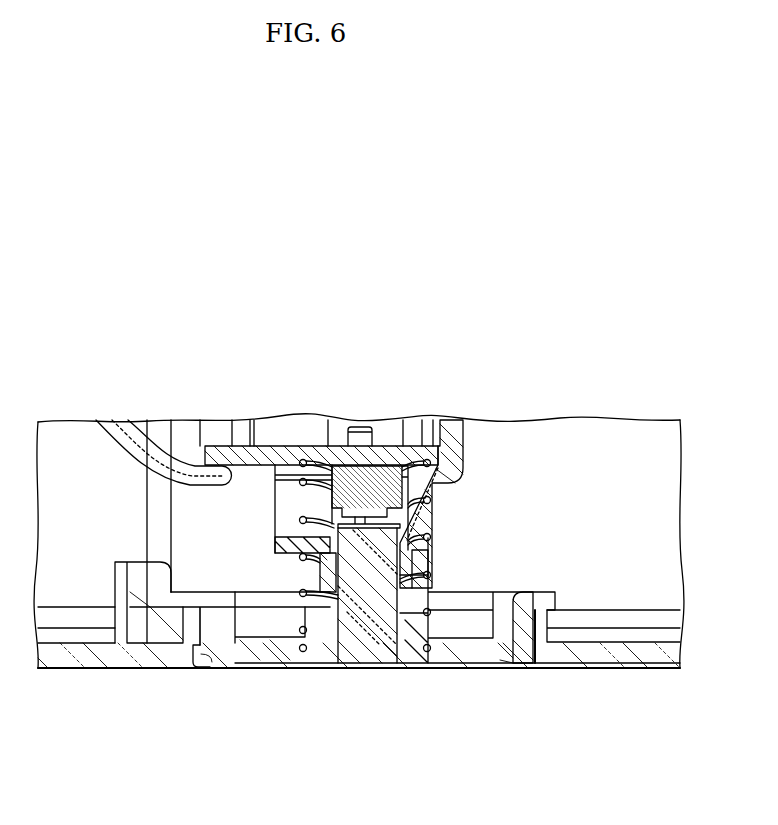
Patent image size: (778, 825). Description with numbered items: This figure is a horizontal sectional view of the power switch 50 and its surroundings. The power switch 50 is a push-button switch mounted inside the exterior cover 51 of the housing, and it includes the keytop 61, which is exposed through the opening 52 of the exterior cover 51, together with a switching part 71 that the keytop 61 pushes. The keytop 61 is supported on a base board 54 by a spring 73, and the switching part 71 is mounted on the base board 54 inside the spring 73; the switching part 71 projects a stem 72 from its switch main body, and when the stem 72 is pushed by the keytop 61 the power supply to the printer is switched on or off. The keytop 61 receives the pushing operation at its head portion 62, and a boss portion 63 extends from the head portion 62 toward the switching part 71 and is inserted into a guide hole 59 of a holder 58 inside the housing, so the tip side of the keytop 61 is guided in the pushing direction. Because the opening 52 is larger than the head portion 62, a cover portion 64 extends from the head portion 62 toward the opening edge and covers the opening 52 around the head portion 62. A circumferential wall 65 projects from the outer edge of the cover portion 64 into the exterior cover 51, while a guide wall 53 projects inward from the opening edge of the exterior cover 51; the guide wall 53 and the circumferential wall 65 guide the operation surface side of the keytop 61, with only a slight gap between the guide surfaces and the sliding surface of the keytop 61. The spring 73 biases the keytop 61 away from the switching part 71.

The power switch 50 is at (299, 722).
The exterior cover 51 is at (114, 665).
The opening 52 is at (215, 665).
The guide wall 53 is at (546, 622).
The base board 54 is at (290, 452).
The holder 58 is at (434, 513).
The guide hole 59 is at (336, 567).
The keytop 61 is at (374, 680).
The head portion 62 is at (396, 658).
The boss portion 63 is at (385, 551).
The cover portion 64 is at (268, 665).
The circumferential wall 65 is at (497, 660).
The switching part 71 is at (382, 490).
The stem 72 is at (308, 518).
The spring 73 is at (432, 574).